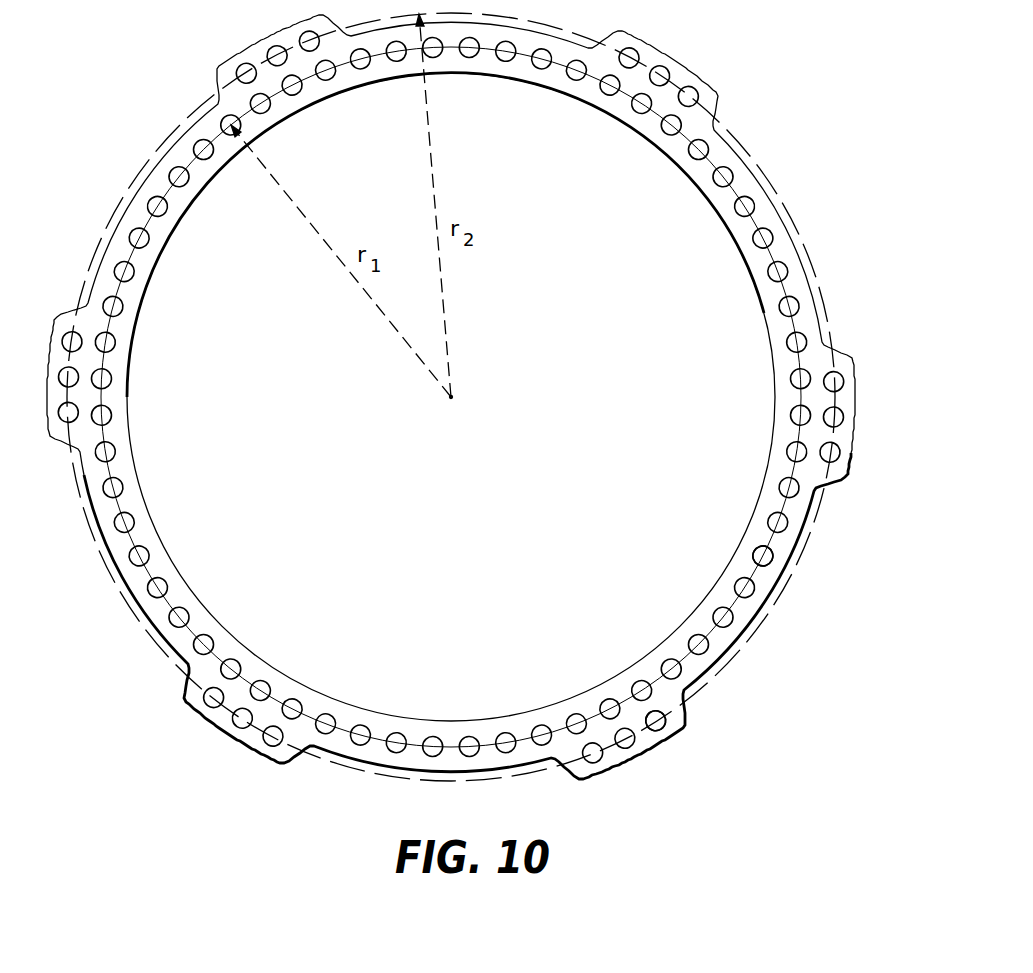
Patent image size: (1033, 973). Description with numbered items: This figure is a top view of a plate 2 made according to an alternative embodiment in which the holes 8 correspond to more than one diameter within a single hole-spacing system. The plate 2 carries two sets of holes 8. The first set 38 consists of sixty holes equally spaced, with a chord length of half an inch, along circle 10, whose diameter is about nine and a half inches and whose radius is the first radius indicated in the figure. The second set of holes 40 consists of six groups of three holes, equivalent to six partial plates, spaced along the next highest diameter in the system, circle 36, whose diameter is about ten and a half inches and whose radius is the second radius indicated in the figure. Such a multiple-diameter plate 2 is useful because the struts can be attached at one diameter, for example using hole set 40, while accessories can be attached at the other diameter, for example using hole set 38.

The plate 2 is at (718, 80).
The holes 8 is at (774, 557).
The circle 10 is at (207, 613).
The circle 36 is at (150, 650).
The first set of holes 38 is at (786, 344).
The second set of holes 40 is at (842, 416).